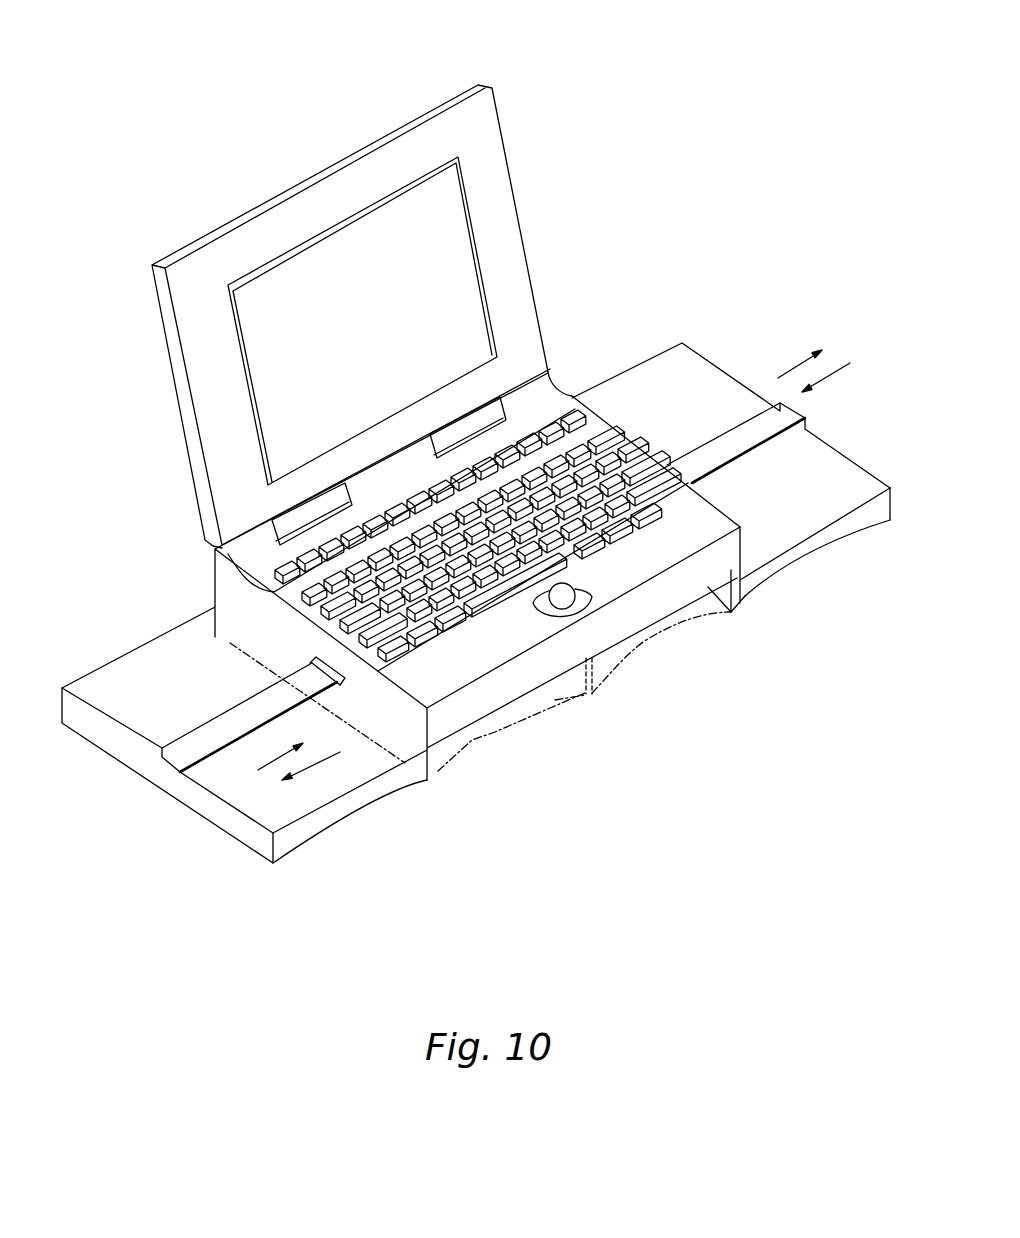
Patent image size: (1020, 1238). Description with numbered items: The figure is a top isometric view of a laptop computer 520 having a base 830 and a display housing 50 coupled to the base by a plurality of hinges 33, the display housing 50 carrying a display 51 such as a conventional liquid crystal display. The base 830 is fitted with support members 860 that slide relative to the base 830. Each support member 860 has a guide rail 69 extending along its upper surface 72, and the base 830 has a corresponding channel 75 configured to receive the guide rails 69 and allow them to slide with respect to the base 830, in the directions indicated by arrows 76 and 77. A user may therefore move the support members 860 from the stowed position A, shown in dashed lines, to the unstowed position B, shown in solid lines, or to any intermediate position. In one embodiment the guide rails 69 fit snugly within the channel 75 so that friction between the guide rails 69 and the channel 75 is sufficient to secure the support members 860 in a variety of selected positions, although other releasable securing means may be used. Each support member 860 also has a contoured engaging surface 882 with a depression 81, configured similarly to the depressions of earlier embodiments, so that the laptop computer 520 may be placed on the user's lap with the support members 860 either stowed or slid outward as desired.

The display housing 50 is at (306, 105).
The display 51 is at (283, 307).
The hinges 33 is at (475, 425).
The laptop computer 520 is at (662, 287).
The base 830 is at (575, 395).
The upper surface 72 is at (121, 683).
The support members 860 is at (120, 746).
The guide rail 69 is at (212, 731).
The channel 75 is at (284, 681).
The contoured engaging surface 882 is at (348, 845).
The depression 81 is at (376, 812).
The arrow 76 is at (833, 373).
The arrow 77 is at (803, 362).
The stowed position A is at (472, 740).
The unstowed position B is at (294, 848).